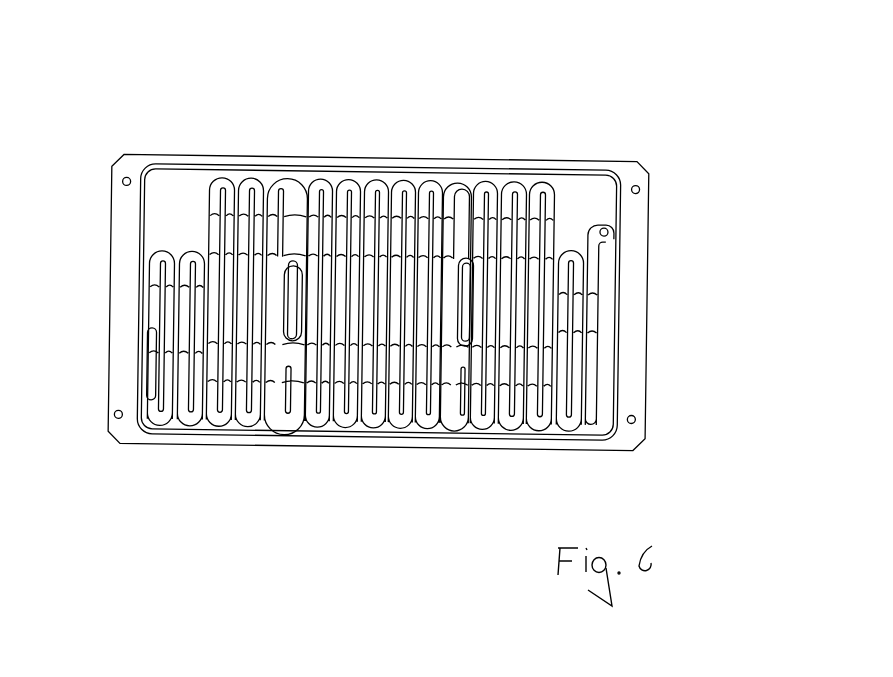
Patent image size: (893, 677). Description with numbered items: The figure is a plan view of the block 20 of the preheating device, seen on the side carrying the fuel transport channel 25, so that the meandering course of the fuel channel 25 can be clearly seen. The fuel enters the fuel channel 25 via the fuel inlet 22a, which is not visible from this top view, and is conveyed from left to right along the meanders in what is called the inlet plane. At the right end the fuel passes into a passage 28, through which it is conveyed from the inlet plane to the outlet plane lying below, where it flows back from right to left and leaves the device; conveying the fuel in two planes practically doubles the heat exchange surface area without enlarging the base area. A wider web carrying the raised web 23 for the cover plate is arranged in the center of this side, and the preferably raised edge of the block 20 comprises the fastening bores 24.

The block 20 is at (600, 127).
The fuel inlet 22a is at (90, 397).
The raised web 23 is at (291, 262).
The fastening bores 24 is at (123, 178).
The fuel transport channel 25 is at (397, 187).
The passage 28 is at (616, 222).